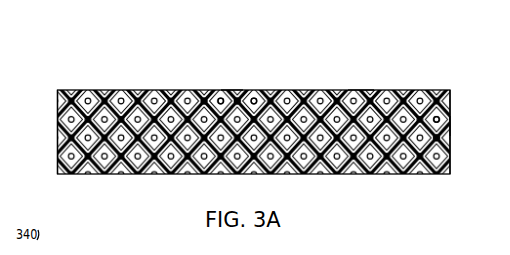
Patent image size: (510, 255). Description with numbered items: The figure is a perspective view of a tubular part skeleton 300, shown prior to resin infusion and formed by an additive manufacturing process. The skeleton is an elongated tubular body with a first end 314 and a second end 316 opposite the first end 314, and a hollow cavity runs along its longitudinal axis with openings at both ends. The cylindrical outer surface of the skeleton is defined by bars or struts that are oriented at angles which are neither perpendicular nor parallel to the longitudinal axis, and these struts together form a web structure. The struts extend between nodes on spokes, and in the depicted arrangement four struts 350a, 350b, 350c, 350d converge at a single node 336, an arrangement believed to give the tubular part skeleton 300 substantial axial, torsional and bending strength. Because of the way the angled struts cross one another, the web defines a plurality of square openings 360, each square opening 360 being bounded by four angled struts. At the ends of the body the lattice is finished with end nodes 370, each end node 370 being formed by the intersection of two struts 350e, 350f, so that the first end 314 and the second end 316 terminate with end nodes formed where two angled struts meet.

The tubular part skeleton 300 is at (84, 43).
The first end 314 is at (50, 103).
The second end 316 is at (442, 103).
The node 336 is at (223, 82).
The strut 350a is at (196, 82).
The strut 350b is at (207, 82).
The strut 350c is at (226, 82).
The strut 350d is at (241, 82).
The strut 350e is at (443, 110).
The strut 350f is at (442, 130).
The square opening 360 is at (353, 82).
The end node 370 is at (442, 118).